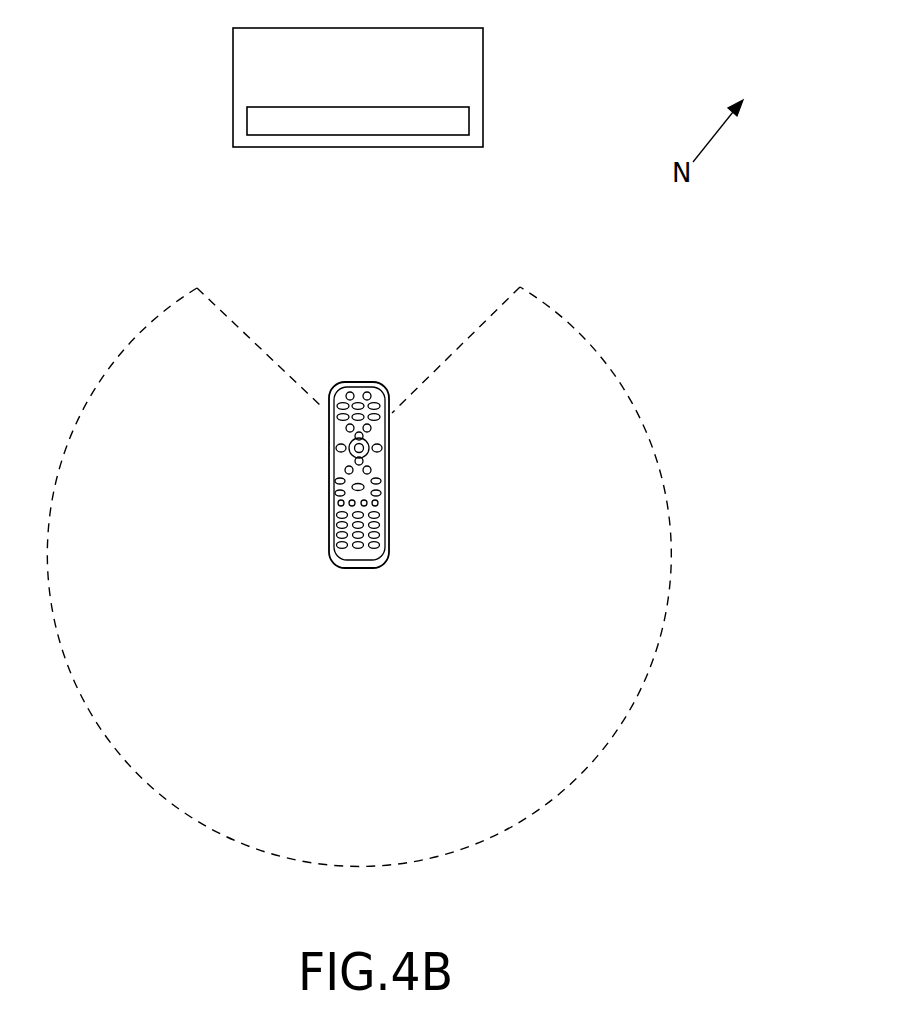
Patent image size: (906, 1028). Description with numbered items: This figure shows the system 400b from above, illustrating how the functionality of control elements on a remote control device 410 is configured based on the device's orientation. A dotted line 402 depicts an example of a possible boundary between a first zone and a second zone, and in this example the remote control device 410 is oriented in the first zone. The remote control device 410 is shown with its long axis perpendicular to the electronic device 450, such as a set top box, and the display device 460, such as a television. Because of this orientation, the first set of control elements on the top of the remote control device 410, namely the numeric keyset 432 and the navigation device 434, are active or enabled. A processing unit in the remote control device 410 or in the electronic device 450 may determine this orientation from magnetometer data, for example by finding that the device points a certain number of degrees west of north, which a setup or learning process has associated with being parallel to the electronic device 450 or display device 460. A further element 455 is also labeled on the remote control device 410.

The system 400b is at (700, 266).
The dotted line 402 is at (670, 586).
The remote control device 410 is at (383, 444).
The numeric keyset 432 is at (375, 522).
The navigation device 434 is at (360, 450).
The electronic device 450 is at (462, 70).
The top buttons / emitter 455 is at (352, 390).
The display device 460 is at (455, 121).